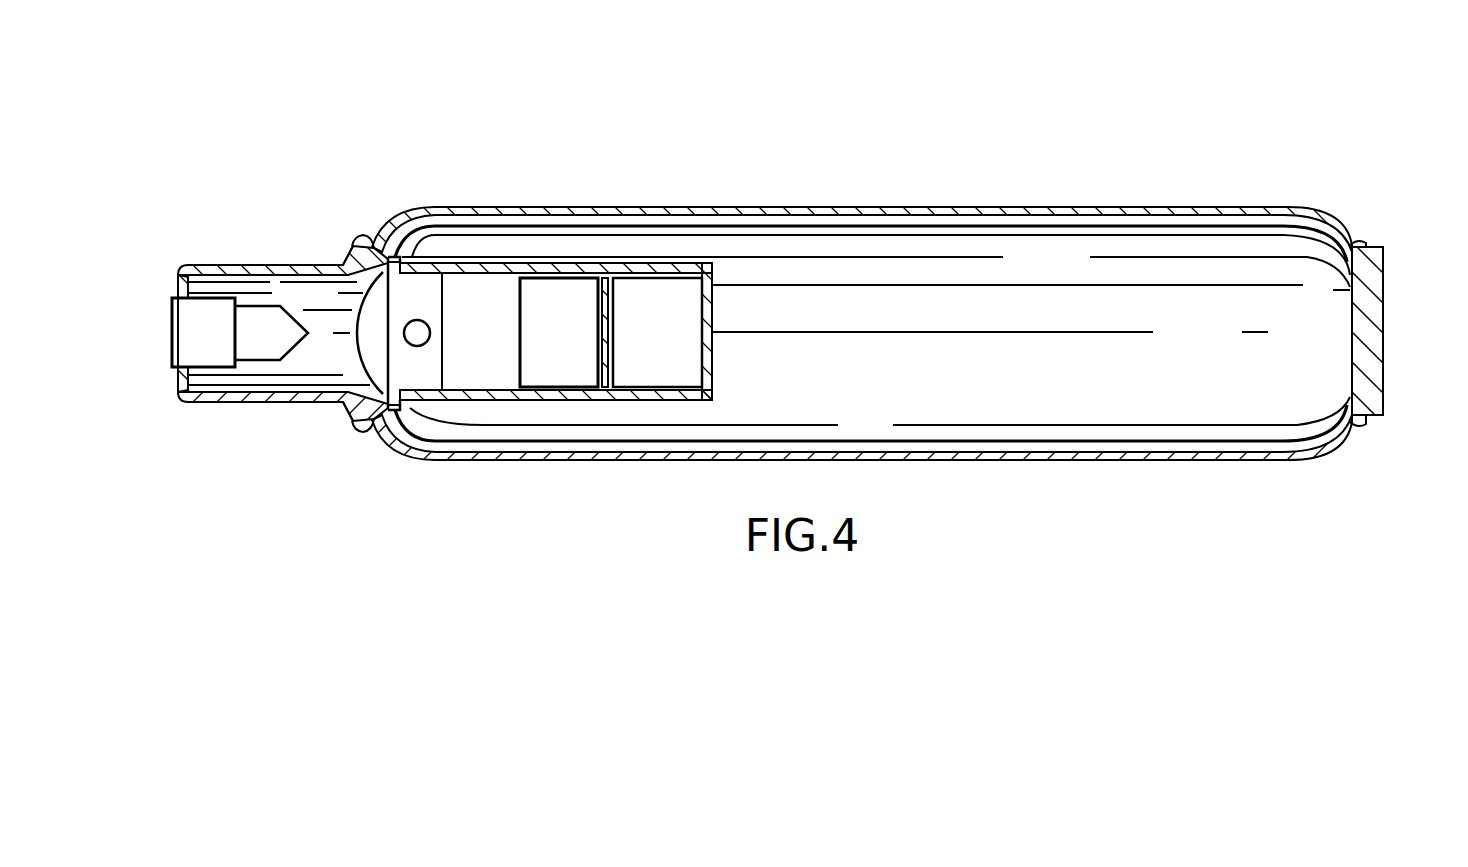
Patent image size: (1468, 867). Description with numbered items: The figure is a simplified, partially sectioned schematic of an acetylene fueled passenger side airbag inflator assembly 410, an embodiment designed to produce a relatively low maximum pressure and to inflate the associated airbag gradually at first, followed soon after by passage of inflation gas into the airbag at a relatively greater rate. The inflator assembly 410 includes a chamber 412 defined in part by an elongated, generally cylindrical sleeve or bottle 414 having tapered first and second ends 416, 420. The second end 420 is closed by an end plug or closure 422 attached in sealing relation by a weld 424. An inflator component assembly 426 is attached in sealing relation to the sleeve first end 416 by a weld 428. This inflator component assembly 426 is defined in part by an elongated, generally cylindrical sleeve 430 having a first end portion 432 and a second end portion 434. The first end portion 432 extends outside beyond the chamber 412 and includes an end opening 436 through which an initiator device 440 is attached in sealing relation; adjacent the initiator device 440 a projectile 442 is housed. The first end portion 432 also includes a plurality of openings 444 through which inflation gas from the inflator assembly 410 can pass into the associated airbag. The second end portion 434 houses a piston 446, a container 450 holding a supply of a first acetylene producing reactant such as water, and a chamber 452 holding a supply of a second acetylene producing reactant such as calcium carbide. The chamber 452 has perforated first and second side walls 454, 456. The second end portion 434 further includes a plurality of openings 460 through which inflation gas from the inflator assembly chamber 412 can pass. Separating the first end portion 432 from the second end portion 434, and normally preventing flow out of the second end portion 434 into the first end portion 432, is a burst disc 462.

The inflator assembly 410 is at (852, 126).
The chamber 412 is at (935, 235).
The sleeve or bottle 414 is at (1067, 212).
The first end 416 is at (384, 198).
The second end 420 is at (1346, 202).
The end plug or closure 422 is at (1383, 302).
The weld 424 is at (1362, 422).
The inflator component assembly 426 is at (328, 253).
The weld 428 is at (357, 424).
The sleeve 430 is at (483, 266).
The first end portion 432 is at (206, 243).
The second end portion 434 is at (711, 252).
The end opening 436 is at (180, 372).
The initiator device 440 is at (185, 325).
The projectile 442 is at (258, 340).
The openings 444 is at (253, 266).
The piston 446 is at (462, 385).
The container 450 is at (562, 276).
The chamber 452 is at (647, 288).
The first side wall 454 is at (612, 367).
The second side wall 456 is at (714, 368).
The openings 460 is at (428, 318).
The burst disc 462 is at (355, 327).